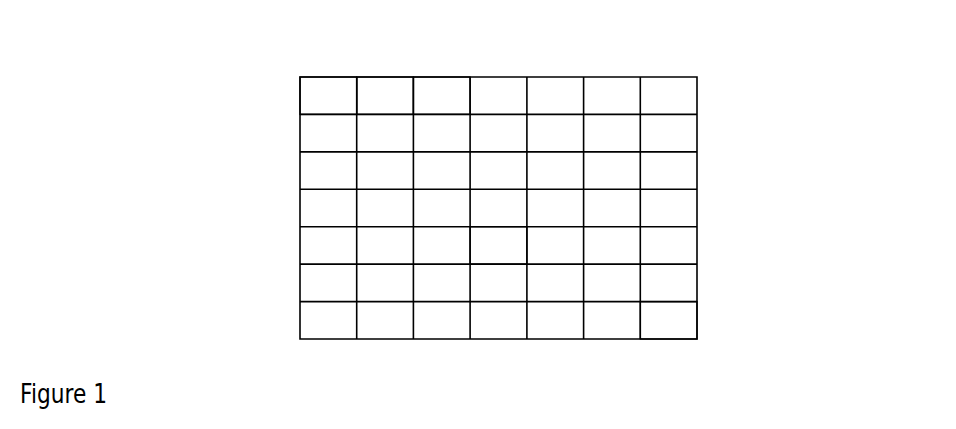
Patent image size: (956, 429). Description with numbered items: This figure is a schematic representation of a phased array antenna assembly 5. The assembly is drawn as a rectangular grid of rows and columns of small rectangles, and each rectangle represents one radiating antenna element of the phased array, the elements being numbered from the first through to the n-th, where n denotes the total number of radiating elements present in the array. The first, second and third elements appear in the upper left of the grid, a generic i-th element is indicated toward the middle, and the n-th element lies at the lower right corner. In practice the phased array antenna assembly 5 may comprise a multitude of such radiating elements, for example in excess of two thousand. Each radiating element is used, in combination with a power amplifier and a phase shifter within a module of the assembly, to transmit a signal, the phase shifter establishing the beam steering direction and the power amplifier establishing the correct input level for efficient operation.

The phased array antenna assembly 5 is at (717, 97).